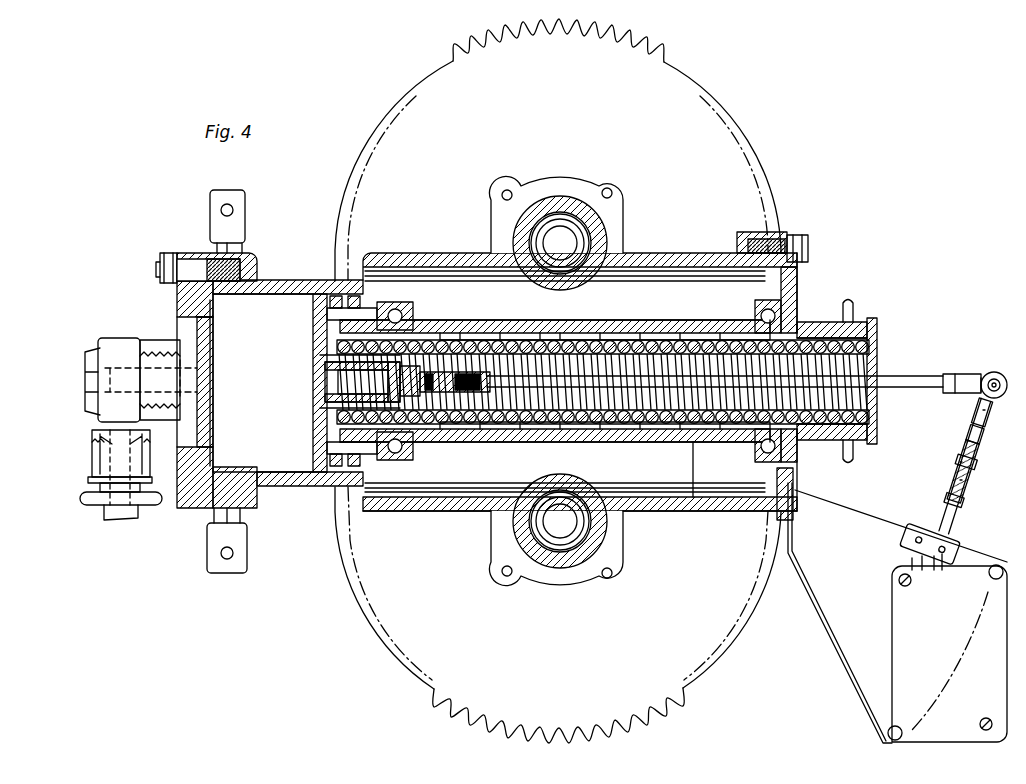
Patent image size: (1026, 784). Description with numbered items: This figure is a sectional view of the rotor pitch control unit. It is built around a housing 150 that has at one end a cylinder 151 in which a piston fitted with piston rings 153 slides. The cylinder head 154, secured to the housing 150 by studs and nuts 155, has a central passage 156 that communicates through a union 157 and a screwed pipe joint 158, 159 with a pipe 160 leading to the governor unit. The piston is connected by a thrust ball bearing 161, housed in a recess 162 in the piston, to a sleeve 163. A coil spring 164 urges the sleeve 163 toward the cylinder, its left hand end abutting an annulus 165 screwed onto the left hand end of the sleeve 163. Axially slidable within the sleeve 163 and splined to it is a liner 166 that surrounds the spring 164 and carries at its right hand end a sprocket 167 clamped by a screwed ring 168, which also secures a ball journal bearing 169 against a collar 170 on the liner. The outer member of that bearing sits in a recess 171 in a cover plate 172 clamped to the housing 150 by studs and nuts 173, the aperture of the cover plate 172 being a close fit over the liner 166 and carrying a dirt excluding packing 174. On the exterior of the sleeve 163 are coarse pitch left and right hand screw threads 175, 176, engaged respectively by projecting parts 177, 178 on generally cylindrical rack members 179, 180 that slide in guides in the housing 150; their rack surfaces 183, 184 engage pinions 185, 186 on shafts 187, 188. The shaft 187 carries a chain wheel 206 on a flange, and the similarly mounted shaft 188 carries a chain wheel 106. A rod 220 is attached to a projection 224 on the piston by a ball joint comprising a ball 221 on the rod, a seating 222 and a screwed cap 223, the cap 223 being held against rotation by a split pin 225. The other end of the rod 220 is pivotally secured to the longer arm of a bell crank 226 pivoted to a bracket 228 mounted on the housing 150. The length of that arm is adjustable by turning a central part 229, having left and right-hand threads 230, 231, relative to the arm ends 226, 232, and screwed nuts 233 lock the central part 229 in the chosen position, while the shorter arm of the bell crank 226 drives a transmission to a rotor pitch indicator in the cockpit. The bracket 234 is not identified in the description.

The chain wheel 106 is at (558, 615).
The chain wheel 206 is at (690, 100).
The housing 150 is at (300, 280).
The cylinder 151 is at (232, 298).
The piston rings 153 is at (346, 294).
The cylinder head 154 is at (165, 287).
The studs and nuts 155 is at (190, 272).
The central passage 156 is at (196, 340).
The union 157 is at (108, 350).
The screwed pipe joint 158 is at (115, 440).
The screwed pipe joint 159 is at (98, 480).
The pipe 160 is at (112, 507).
The thrust ball bearing 161 is at (432, 318).
The recess 162 is at (380, 262).
The sleeve 163 is at (490, 443).
The coil spring 164 is at (430, 338).
The annulus 165 is at (327, 326).
The liner 166 is at (658, 346).
The sprocket 167 is at (870, 324).
The screwed ring 168 is at (872, 444).
The ball journal bearing 169 is at (780, 500).
The collar 170 is at (760, 444).
The recess 171 is at (800, 318).
The cover plate 172 is at (800, 284).
The studs and nuts 173 is at (790, 250).
The dirt excluding packing 174 is at (800, 326).
The left hand screw thread 175 is at (570, 333).
The right hand screw thread 176 is at (500, 333).
The projecting part 177 is at (605, 335).
The projecting part 178 is at (536, 442).
The rack member 179 is at (660, 286).
The rack member 180 is at (688, 495).
The rack surface 183 is at (648, 276).
The rack surface 184 is at (625, 512).
The pinion 185 is at (585, 232).
The pinion 186 is at (566, 528).
The shaft 187 is at (560, 236).
The shaft 188 is at (555, 545).
The rod 220 is at (878, 378).
The ball 221 is at (450, 412).
The seating 222 is at (362, 382).
The screwed cap 223 is at (470, 345).
The projection 224 is at (328, 396).
The split pin 225 is at (328, 368).
The bell crank 226 is at (958, 516).
The bracket 228 is at (942, 562).
The central part 229 is at (970, 464).
The left-hand thread 230 is at (966, 482).
The right-hand thread 231 is at (970, 442).
The end of arm 232 is at (990, 372).
The screwed nuts 233 is at (972, 432).
The bracket 234 is at (905, 560).